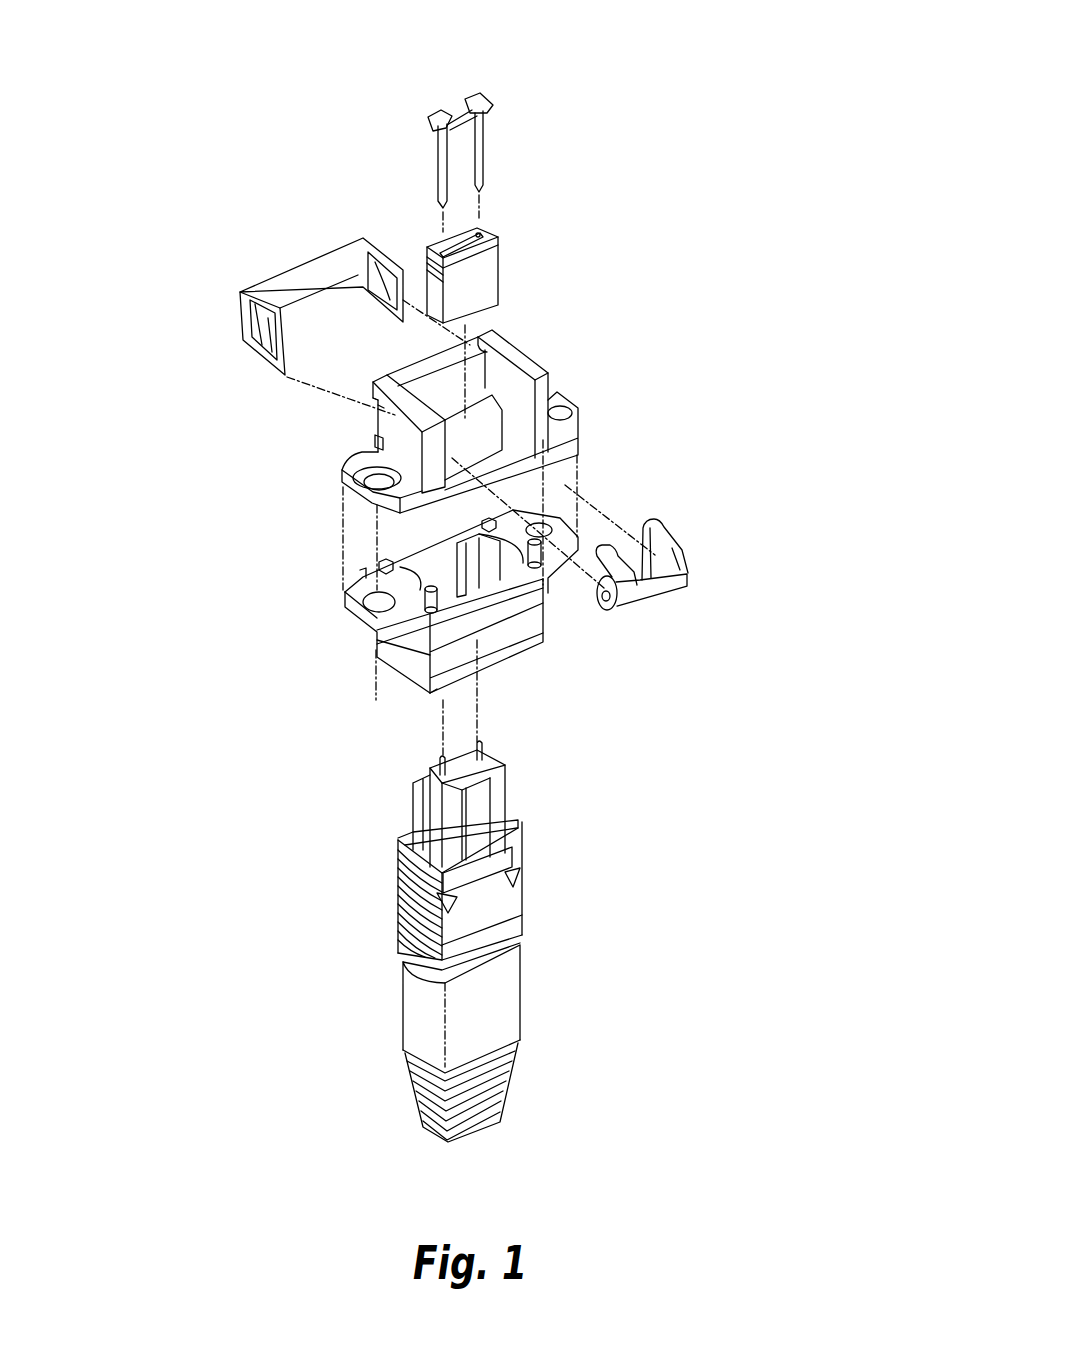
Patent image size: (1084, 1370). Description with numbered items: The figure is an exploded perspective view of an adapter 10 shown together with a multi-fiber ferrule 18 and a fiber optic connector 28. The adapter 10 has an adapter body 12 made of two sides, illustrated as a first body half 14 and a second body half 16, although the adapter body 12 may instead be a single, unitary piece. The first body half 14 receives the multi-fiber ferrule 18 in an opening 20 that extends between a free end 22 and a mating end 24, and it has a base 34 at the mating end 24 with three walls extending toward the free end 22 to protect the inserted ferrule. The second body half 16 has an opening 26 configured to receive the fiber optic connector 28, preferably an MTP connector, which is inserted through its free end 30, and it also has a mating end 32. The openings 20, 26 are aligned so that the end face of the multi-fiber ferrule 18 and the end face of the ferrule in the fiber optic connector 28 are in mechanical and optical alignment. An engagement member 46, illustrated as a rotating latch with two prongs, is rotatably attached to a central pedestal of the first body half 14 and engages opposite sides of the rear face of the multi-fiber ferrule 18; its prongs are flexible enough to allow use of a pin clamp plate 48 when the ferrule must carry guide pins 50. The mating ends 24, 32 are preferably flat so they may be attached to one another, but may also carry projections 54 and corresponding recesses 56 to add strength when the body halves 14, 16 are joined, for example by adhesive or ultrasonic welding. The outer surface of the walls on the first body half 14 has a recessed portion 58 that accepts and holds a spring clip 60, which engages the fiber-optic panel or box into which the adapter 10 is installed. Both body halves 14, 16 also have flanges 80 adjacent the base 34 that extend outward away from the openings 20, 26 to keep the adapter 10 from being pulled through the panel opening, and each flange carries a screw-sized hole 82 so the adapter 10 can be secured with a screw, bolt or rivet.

The adapter 10 is at (759, 150).
The adapter body 12 is at (713, 320).
The first body half 14 is at (490, 370).
The second body half 16 is at (537, 647).
The multi-fiber ferrule 18 is at (500, 268).
The opening 20 is at (515, 365).
The free end 22 is at (383, 372).
The mating end 24 is at (345, 507).
The opening 26 is at (470, 580).
The fiber optic connector 28 is at (525, 900).
The free end 30 is at (423, 693).
The mating end 32 is at (398, 663).
The base 34 is at (368, 445).
The engagement member 46 is at (692, 585).
The pin clamp plate 48 is at (487, 95).
The guide pins 50 is at (487, 152).
The projections 54 is at (545, 556).
The recesses 56 is at (358, 573).
The recessed portion 58 is at (370, 413).
The spring clip 60 is at (310, 255).
The flanges 80 is at (572, 406).
The screw-sized hole 82 is at (565, 480).